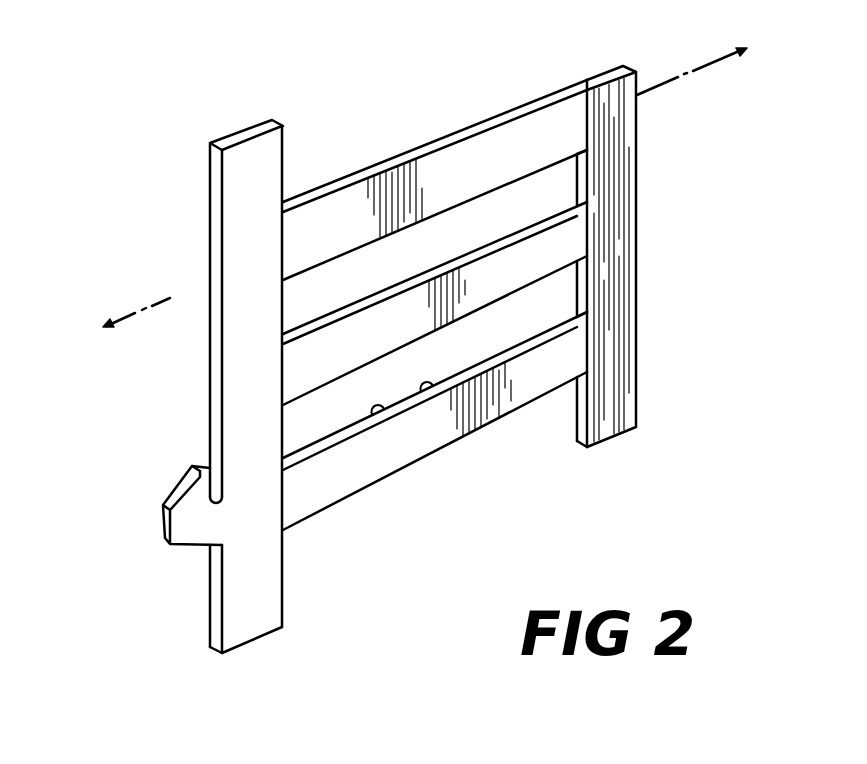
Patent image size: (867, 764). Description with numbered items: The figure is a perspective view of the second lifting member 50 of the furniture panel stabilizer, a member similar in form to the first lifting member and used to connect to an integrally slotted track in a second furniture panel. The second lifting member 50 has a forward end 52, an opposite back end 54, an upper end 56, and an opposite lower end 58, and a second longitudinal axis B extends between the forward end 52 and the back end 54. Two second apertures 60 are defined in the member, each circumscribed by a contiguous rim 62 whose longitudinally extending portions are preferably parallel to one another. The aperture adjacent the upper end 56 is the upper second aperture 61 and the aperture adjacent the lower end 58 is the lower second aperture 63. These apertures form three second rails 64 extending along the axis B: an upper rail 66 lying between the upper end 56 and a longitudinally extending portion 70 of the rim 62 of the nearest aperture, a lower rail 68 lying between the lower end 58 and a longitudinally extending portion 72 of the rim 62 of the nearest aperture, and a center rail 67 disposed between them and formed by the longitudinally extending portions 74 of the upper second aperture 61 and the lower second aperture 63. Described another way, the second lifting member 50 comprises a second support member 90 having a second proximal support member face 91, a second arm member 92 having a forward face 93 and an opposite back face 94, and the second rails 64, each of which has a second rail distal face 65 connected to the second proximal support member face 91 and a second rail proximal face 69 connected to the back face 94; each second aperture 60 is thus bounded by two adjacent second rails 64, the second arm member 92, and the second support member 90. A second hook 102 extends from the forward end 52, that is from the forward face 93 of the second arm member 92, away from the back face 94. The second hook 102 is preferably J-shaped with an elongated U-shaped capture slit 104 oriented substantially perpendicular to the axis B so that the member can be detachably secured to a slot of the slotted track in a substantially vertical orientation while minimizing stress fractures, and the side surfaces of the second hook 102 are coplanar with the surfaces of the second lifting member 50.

The second lifting member 50 is at (638, 214).
The forward end 52 is at (210, 157).
The back end 54 is at (638, 245).
The upper end 56 is at (602, 77).
The lower end 58 is at (612, 440).
The second aperture 60 is at (540, 183).
The upper second aperture 61 is at (562, 183).
The rim 62 is at (435, 217).
The lower second aperture 63 is at (562, 303).
The second rails 64 is at (407, 317).
The second rail distal face 65 is at (283, 234).
The upper rail 66 is at (328, 220).
The center rail 67 is at (293, 370).
The lower rail 68 is at (515, 392).
The second rail proximal face 69 is at (588, 117).
The longitudinally extending portion of the rim 70 is at (480, 200).
The longitudinally extending portion of the rim 72 is at (383, 412).
The longitudinally extending portion 74 is at (350, 313).
The second support member 90 is at (612, 405).
The second proximal support member face 91 is at (590, 188).
The second arm member 92 is at (233, 602).
The forward face 93 is at (213, 357).
The back face 94 is at (283, 605).
The second hook 102 is at (163, 523).
The capture slit 104 is at (212, 466).
The second longitudinal axis B is at (697, 63).